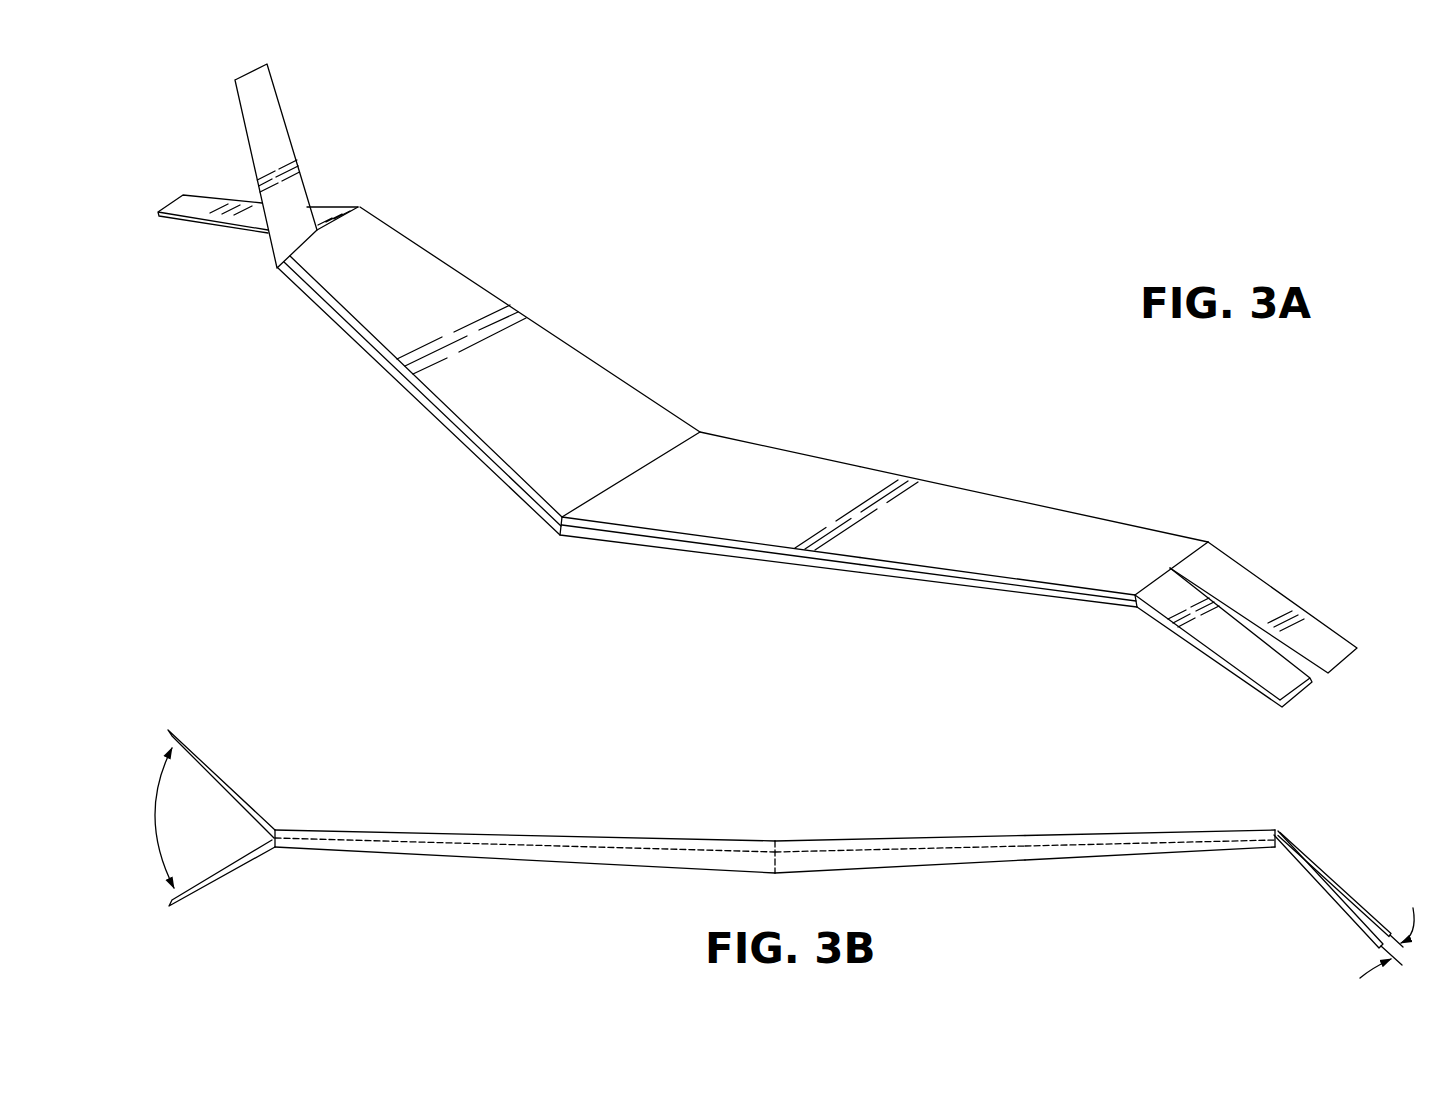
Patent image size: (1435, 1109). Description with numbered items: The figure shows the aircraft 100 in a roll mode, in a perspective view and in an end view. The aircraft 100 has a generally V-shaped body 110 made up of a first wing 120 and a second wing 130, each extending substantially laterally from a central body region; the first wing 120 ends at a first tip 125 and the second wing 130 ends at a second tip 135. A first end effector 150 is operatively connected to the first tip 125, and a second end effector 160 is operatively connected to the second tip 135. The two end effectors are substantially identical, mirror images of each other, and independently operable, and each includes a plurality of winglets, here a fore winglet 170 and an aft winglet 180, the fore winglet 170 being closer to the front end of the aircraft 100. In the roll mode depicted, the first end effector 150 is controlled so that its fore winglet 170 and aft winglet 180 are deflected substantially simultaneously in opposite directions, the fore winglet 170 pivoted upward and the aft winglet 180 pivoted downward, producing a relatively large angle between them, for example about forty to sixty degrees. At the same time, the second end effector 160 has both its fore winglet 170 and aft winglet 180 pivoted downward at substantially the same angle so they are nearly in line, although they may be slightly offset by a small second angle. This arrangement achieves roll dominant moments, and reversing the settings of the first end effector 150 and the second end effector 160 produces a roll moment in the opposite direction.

In FIG. 3A, the aircraft 100 is at (760, 340).
In FIG. 3B, the aircraft 100 is at (792, 790).
In FIG. 3A, the body 110 is at (767, 560).
In FIG. 3B, the body 110 is at (940, 860).
In FIG. 3A, the first wing 120 is at (470, 413).
In FIG. 3B, the first wing 120 is at (540, 857).
In FIG. 3A, the first tip 125 is at (312, 248).
In FIG. 3B, the first tip 125 is at (283, 840).
In FIG. 3A, the second wing 130 is at (930, 552).
In FIG. 3B, the second wing 130 is at (1090, 858).
In FIG. 3A, the second tip 135 is at (1162, 568).
In FIG. 3B, the second tip 135 is at (1268, 838).
In FIG. 3A, the first end effector 150 is at (220, 253).
In FIG. 3B, the first end effector 150 is at (235, 700).
In FIG. 3A, the second end effector 160 is at (1290, 556).
In FIG. 3B, the second end effector 160 is at (1340, 860).
In FIG. 3A, the fore winglet 170 is at (257, 80).
In FIG. 3B, the fore winglet 170 is at (215, 777).
In FIG. 3A, the aft winglet 180 is at (198, 203).
In FIG. 3B, the aft winglet 180 is at (220, 873).